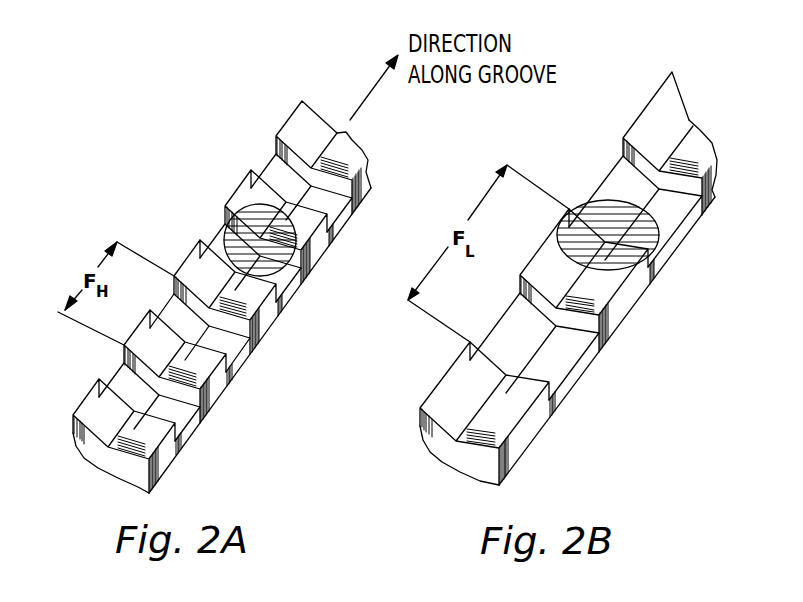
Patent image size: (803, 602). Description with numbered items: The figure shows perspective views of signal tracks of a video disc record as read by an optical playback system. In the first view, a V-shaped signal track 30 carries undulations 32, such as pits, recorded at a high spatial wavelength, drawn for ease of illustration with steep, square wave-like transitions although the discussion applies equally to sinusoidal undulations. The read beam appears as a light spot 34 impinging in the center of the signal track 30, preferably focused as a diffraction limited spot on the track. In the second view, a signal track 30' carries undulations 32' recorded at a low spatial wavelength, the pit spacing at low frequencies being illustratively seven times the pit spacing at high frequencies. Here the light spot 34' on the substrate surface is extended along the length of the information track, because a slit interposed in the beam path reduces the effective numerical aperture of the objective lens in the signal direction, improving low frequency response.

In FIG. 2A, the signal track 30 is at (222, 312).
In FIG. 2A, the undulations 32 is at (217, 297).
In FIG. 2A, the light spot 34 is at (246, 226).
In FIG. 2B, the signal track 30' is at (568, 302).
In FIG. 2B, the undulations 32' is at (565, 278).
In FIG. 2B, the light spot 34' is at (648, 235).